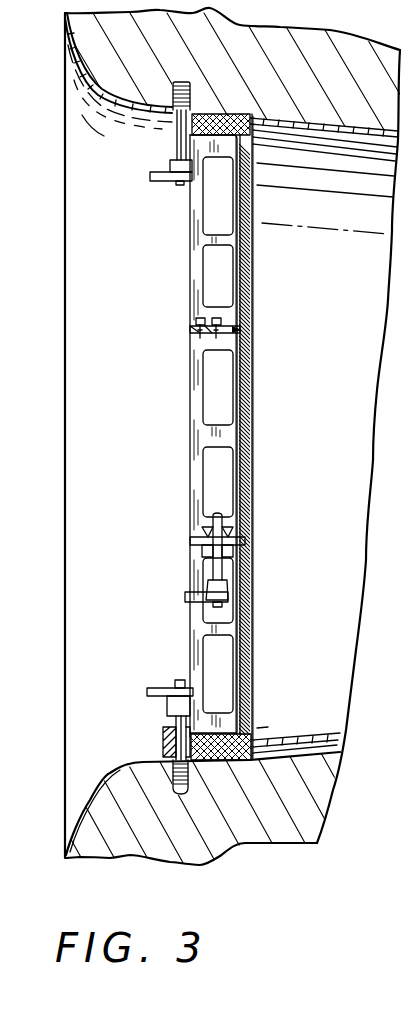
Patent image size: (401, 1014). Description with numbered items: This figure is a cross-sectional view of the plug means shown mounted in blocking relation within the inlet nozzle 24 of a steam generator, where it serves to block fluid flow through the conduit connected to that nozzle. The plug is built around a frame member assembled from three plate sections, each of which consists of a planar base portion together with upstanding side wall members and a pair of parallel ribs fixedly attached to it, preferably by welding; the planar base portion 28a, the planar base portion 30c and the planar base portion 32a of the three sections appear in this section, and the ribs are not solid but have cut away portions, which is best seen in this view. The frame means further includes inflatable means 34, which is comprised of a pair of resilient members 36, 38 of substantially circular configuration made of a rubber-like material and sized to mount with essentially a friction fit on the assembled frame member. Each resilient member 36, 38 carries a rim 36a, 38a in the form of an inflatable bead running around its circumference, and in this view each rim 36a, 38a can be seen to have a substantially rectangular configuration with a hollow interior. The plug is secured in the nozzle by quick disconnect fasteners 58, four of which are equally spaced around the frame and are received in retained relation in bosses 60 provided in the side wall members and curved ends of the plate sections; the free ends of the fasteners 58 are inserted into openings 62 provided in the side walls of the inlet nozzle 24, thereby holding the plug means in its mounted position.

The inlet nozzle 24 is at (260, 849).
The planar base portion 28a is at (231, 212).
The planar base portion 30c is at (236, 488).
The planar base portion 32a is at (234, 676).
The inflatable means 34 is at (262, 406).
The resilient member 36 is at (250, 302).
The rim 36a is at (214, 117).
The resilient member 38 is at (253, 340).
The rim 38a is at (248, 117).
The quick disconnect fastener 58 is at (176, 184).
The boss 60 is at (165, 129).
The opening 62 is at (184, 79).